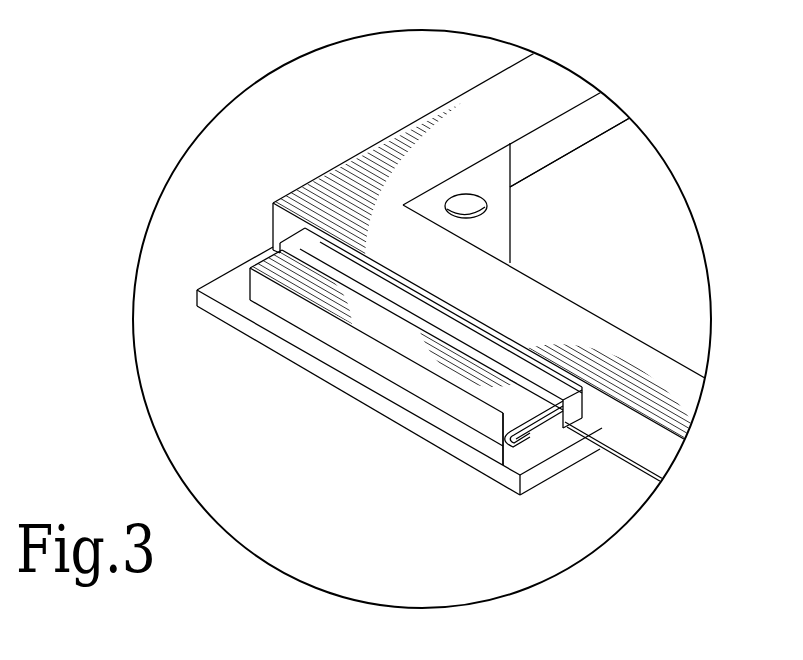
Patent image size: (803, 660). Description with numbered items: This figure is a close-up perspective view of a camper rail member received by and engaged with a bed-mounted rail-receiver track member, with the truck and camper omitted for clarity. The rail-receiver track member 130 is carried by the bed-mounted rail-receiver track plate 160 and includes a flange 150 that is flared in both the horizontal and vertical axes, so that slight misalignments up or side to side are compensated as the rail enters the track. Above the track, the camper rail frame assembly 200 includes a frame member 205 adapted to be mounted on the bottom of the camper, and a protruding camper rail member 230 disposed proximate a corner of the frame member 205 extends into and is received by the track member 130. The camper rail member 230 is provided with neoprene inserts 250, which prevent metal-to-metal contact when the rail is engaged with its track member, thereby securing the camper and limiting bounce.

The left front bed-mounted rail-receiver track member 130 is at (373, 320).
The flange 150 is at (503, 440).
The bed-mounted rail-receiver track plate 160 is at (253, 313).
The camper rail frame assembly 200 is at (648, 342).
The frame member 205 is at (590, 130).
The left front camper rail member 230 is at (523, 448).
The neoprene insert 250 is at (544, 411).